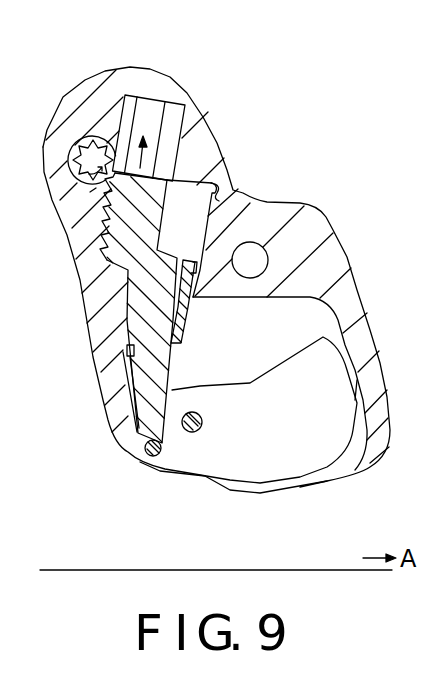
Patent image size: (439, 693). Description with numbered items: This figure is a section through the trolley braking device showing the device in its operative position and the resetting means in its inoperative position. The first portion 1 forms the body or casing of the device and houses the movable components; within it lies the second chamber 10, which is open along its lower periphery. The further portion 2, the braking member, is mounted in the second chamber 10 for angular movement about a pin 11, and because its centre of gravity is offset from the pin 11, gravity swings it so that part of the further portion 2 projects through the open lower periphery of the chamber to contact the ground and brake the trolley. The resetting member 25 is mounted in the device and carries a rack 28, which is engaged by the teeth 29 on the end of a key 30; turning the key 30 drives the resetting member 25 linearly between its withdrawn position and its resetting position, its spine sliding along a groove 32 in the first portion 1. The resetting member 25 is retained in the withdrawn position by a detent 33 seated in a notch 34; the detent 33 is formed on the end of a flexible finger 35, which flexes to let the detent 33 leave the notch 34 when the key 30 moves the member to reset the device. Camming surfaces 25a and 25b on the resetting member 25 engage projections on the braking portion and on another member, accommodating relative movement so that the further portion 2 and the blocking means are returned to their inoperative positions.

The first portion 1 is at (357, 306).
The further portion 2 is at (345, 423).
The second chamber 10 is at (338, 468).
The pin 11 is at (199, 421).
The resetting member 25 is at (168, 180).
The camming surface 25a is at (158, 458).
The camming surface 25b is at (122, 378).
The rack 28 is at (100, 250).
The teeth 29 is at (92, 134).
The key 30 is at (90, 192).
The groove 32 is at (147, 103).
The detent 33 is at (200, 268).
The notch 34 is at (243, 188).
The flexible finger 35 is at (182, 322).